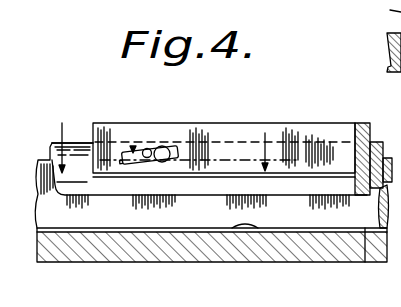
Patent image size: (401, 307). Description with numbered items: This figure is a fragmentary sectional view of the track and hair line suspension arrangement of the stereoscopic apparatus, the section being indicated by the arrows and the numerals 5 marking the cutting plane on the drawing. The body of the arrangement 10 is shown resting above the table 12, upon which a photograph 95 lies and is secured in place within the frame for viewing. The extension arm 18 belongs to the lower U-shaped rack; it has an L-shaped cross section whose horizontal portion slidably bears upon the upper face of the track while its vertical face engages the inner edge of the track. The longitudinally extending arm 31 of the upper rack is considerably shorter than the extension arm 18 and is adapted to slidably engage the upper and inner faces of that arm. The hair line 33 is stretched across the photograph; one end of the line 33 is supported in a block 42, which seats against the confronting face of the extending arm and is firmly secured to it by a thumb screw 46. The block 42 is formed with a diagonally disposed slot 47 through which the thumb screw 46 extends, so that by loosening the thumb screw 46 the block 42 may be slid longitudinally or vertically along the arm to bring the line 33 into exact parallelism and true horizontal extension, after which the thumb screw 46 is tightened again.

The housing body 10 is at (197, 204).
The table 12 is at (133, 250).
The extension arm of rack 18 is at (79, 146).
The longitudinally extending arm of rack 31 is at (260, 128).
The line 33 is at (136, 147).
The block 42 is at (133, 148).
The thumb screw 46 is at (164, 146).
The diagonally disposed slot 47 is at (150, 148).
The section line 5- 5 is at (158, 148).
The photograph 95 is at (219, 234).